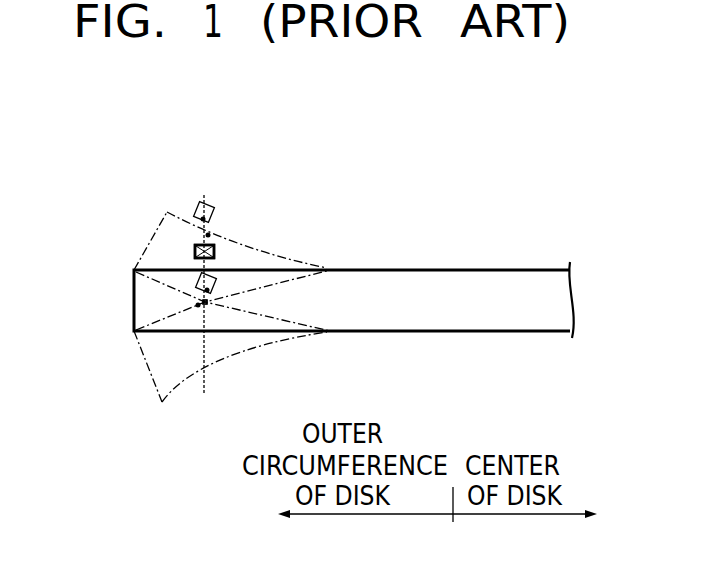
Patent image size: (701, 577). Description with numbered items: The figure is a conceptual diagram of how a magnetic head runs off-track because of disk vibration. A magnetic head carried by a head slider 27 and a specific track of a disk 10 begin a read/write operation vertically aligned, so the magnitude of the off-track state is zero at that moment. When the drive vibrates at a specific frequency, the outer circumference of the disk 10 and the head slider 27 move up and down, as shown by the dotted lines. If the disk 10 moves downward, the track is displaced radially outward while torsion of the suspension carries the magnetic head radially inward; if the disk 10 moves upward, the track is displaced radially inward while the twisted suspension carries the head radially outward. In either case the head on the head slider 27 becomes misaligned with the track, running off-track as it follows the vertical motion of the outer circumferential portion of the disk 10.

The disk 10 is at (531, 275).
The head slider 27 is at (215, 254).